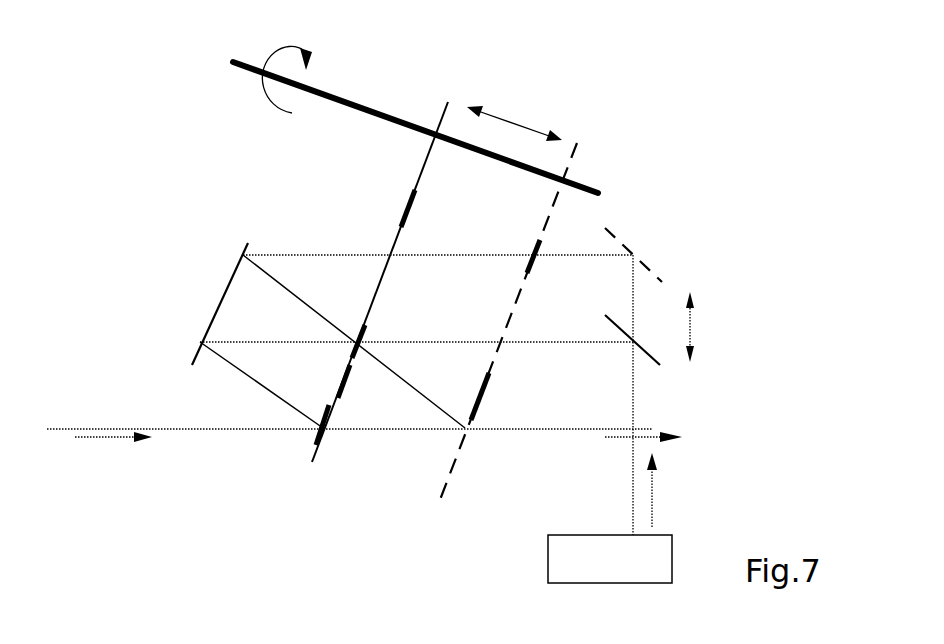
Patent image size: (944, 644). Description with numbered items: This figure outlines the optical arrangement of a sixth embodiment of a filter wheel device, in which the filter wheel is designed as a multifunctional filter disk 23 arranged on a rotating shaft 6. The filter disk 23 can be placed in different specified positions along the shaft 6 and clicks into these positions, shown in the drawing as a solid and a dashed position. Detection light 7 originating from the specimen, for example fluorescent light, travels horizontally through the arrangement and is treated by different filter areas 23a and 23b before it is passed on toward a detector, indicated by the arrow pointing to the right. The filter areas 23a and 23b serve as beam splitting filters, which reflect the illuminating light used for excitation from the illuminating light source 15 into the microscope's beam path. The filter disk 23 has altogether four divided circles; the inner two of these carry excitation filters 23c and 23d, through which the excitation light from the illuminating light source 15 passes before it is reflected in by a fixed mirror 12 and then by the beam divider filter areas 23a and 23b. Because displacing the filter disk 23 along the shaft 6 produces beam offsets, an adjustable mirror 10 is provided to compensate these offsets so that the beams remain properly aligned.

The rotating shaft 6 is at (235, 63).
The detection light 7 is at (212, 428).
The adjustable mirror 10 is at (660, 365).
The fixed mirror 12 is at (192, 365).
The illuminating light source 15 is at (610, 559).
The multifunctional filter disk 23 is at (349, 278).
The filter area 23a is at (313, 443).
The filter area 23b is at (342, 390).
The excitation filter 23c is at (360, 327).
The excitation filter 23d is at (407, 213).